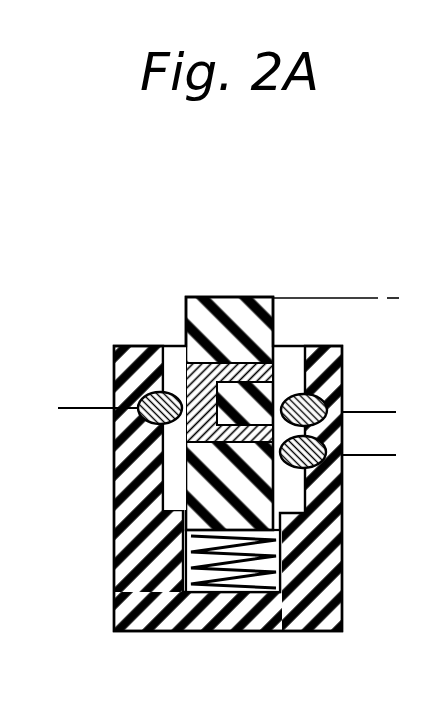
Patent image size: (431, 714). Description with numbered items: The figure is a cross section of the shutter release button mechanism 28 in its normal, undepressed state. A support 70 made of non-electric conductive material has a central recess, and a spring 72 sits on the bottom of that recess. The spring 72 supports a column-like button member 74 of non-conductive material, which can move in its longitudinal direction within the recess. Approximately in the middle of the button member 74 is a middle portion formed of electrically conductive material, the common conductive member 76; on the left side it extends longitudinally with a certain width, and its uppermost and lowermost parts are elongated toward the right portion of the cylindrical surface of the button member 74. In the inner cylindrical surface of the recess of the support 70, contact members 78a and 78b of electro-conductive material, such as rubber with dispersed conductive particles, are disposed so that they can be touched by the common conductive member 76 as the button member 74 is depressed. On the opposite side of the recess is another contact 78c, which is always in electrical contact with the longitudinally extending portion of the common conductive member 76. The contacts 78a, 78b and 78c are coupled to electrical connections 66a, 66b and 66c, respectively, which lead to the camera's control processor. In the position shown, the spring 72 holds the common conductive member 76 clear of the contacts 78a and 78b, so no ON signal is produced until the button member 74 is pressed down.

The shutter release button mechanism 28 is at (224, 266).
The support 70 is at (343, 593).
The spring 72 is at (242, 592).
The button member 74 is at (266, 297).
The common conductive member 76 is at (180, 368).
The contact member 78a is at (319, 392).
The contact member 78b is at (325, 459).
The contact 78c is at (139, 390).
The electrical connection 66a is at (358, 412).
The electrical connection 66b is at (356, 453).
The electrical connection 66c is at (84, 408).